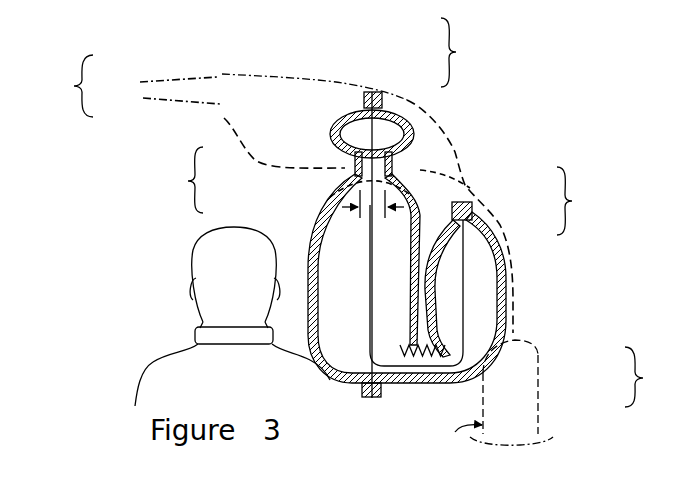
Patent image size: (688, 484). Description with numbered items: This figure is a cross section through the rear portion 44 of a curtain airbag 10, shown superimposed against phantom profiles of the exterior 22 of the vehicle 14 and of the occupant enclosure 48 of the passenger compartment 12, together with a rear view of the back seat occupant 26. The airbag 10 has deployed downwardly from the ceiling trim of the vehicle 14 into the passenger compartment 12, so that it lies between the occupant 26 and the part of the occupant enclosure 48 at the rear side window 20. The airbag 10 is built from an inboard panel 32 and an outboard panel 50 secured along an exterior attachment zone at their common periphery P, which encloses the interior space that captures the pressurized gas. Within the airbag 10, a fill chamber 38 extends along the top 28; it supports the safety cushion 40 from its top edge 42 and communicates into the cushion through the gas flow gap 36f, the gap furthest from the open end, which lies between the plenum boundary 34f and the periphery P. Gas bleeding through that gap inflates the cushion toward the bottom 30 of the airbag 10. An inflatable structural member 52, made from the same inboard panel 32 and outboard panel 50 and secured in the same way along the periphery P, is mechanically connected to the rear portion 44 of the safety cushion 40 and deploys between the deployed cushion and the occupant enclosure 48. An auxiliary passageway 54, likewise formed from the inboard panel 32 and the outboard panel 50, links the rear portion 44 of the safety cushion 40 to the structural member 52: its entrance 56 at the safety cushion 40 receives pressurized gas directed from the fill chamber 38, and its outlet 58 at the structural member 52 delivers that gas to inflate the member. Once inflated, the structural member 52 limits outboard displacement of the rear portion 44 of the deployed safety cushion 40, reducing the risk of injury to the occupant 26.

The airbag 10 is at (381, 126).
The passenger compartment 12 is at (158, 156).
The vehicle 14 is at (357, 231).
The rear side window 20 is at (464, 186).
The exterior 22 is at (221, 74).
The back seat occupant 26 is at (249, 274).
The top 28 is at (350, 105).
The bottom 30 is at (328, 380).
The inboard panel 32 is at (361, 96).
The plenum boundary 34f is at (345, 195).
The gas flow gap 36f is at (398, 215).
The fill chamber 38 is at (360, 136).
The safety cushion 40 is at (345, 240).
The top edge 42 is at (345, 196).
The rear portion 44 is at (313, 330).
The occupant enclosure 48 is at (223, 118).
The outboard panel 50 is at (386, 100).
The inflatable structural member 52 is at (480, 308).
The auxiliary passageway 54 is at (441, 374).
The entrance 56 is at (381, 366).
The outlet 58 is at (515, 345).
The periphery P is at (373, 90).